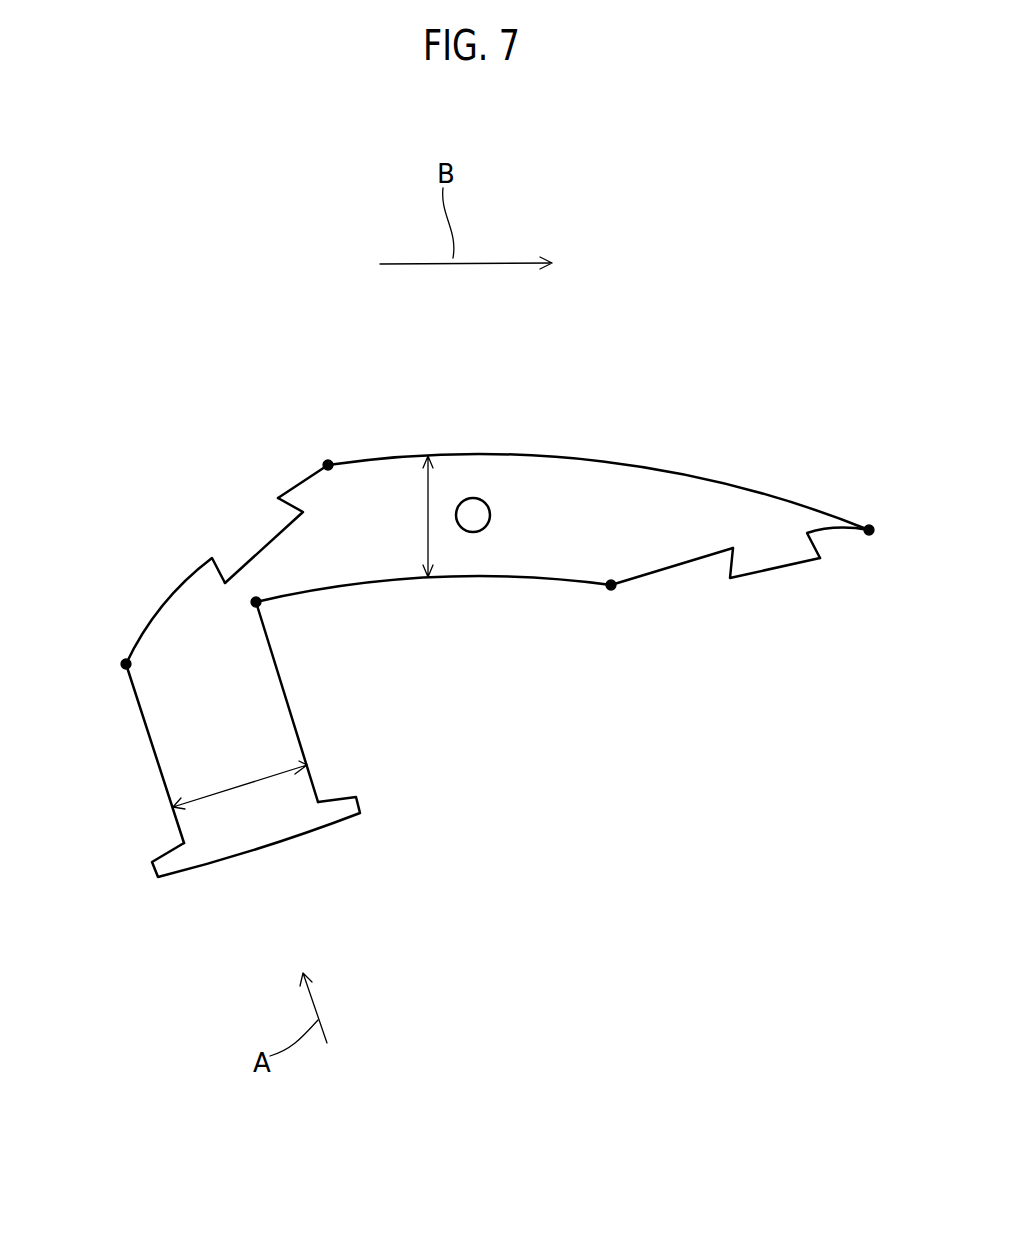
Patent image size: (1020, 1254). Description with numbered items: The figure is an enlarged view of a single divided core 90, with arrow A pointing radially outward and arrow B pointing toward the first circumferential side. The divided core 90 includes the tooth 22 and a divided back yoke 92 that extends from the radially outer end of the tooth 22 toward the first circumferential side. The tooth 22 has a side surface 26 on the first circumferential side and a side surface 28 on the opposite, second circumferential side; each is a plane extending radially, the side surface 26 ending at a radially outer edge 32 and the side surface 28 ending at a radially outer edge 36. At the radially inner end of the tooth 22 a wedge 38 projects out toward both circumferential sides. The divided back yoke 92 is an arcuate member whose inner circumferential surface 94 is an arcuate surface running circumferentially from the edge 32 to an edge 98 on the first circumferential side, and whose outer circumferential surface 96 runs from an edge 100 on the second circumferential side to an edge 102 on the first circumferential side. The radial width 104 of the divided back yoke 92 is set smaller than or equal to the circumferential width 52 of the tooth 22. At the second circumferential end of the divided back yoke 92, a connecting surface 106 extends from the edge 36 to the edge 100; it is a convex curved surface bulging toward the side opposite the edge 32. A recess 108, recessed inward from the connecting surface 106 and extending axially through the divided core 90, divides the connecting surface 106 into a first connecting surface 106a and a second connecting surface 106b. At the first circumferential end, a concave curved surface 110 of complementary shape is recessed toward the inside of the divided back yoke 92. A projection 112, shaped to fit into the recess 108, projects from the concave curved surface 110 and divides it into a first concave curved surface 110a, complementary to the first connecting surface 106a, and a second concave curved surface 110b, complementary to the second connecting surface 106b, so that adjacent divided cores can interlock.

The divided core 90 is at (790, 118).
The divided back yoke 92 is at (582, 492).
The inner circumferential surface 94 is at (475, 578).
The outer circumferential surface 96 is at (680, 473).
The edge 98 is at (611, 585).
The edge 100 is at (328, 465).
The edge 102 is at (869, 530).
The radial width 104 is at (428, 518).
The connecting surface 106 is at (223, 318).
The first connecting surface 106a is at (163, 607).
The second connecting surface 106b is at (297, 480).
The recess 108 is at (257, 548).
The concave curved surface 110 is at (847, 837).
The first concave curved surface 110a is at (675, 567).
The second concave curved surface 110b is at (830, 530).
The projection 112 is at (770, 570).
The tooth 22 is at (262, 730).
The side surface 26 is at (288, 688).
The side surface 28 is at (145, 742).
The radially outer edge 32 is at (256, 602).
The radially outer edge 36 is at (125, 664).
The wedge 38 is at (168, 860).
The circumferential width 52 is at (240, 785).